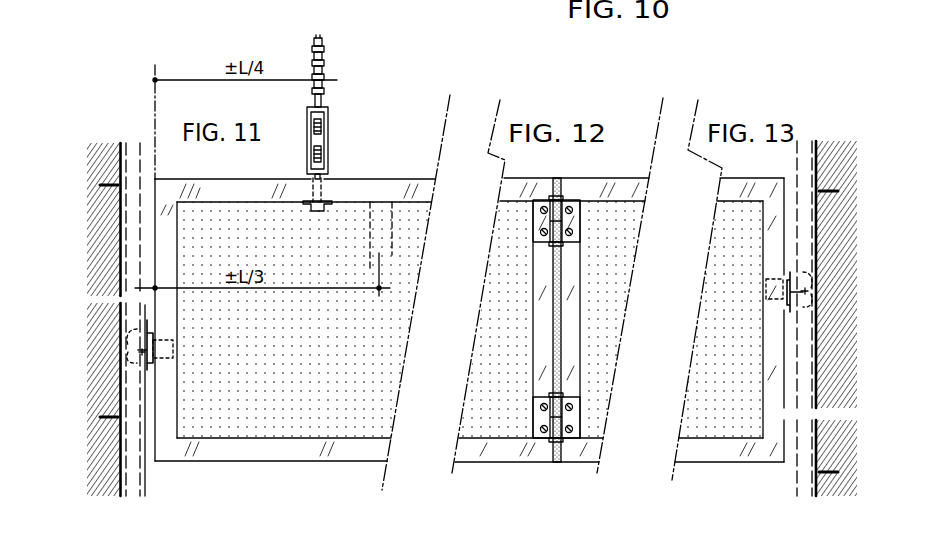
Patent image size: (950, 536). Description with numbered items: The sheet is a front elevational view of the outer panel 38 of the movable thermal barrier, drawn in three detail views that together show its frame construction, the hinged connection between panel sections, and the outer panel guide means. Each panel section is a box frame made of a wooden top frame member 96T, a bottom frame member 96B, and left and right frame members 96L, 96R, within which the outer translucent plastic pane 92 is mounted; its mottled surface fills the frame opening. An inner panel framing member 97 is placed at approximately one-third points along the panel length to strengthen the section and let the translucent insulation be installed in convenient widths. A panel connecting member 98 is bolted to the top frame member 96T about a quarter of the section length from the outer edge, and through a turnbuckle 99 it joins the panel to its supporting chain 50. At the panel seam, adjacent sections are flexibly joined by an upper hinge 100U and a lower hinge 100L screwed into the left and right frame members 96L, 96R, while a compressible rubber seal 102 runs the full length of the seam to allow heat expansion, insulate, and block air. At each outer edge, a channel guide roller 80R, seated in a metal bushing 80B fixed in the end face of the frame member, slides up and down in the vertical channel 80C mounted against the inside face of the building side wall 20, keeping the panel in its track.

In FIG. 11, the side wall 20 is at (105, 437).
In FIG. 13, the side wall 20 is at (831, 292).
In FIG. 12, the outer panel 38 is at (452, 447).
In FIG. 11, the chain 50 is at (338, 62).
In FIG. 11, the metal bushing 80B is at (150, 320).
In FIG. 13, the metal bushing 80B is at (773, 295).
In FIG. 11, the channel guide roller 80R is at (130, 350).
In FIG. 13, the channel guide roller 80R is at (815, 282).
In FIG. 11, the vertical channel 80C is at (132, 377).
In FIG. 13, the vertical channel 80C is at (806, 242).
In FIG. 11, the translucent plastic pane 92 is at (405, 272).
In FIG. 12, the translucent plastic pane 92 is at (534, 310).
In FIG. 11, the top frame member 96T is at (388, 188).
In FIG. 12, the top frame member 96T is at (601, 187).
In FIG. 13, the top frame member 96T is at (731, 192).
In FIG. 11, the bottom frame member 96B is at (366, 446).
In FIG. 12, the bottom frame member 96B is at (486, 445).
In FIG. 13, the bottom frame member 96B is at (689, 449).
In FIG. 11, the left frame member 96L is at (165, 396).
In FIG. 12, the left frame member 96L is at (577, 295).
In FIG. 12, the right frame member 96R is at (540, 365).
In FIG. 13, the right frame member 96R is at (773, 217).
In FIG. 11, the inner panel framing member 97 is at (383, 237).
In FIG. 11, the panel connecting member 98 is at (330, 190).
In FIG. 11, the turnbuckle 99 is at (336, 119).
In FIG. 12, the upper hinge 100U is at (541, 221).
In FIG. 12, the lower hinge 100L is at (569, 415).
In FIG. 12, the compressible rubber seal 102 is at (554, 273).